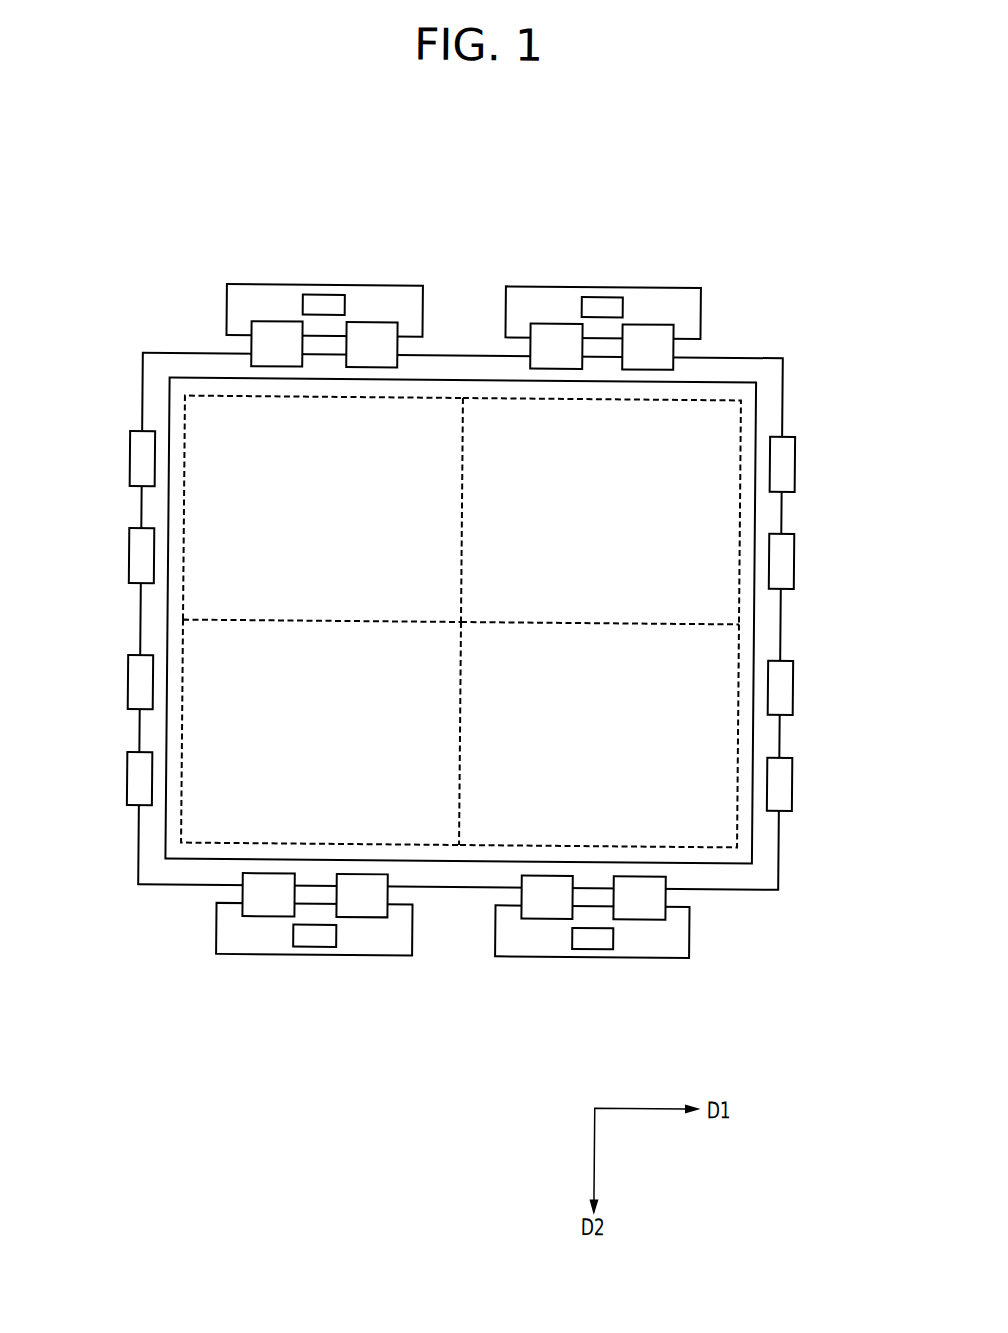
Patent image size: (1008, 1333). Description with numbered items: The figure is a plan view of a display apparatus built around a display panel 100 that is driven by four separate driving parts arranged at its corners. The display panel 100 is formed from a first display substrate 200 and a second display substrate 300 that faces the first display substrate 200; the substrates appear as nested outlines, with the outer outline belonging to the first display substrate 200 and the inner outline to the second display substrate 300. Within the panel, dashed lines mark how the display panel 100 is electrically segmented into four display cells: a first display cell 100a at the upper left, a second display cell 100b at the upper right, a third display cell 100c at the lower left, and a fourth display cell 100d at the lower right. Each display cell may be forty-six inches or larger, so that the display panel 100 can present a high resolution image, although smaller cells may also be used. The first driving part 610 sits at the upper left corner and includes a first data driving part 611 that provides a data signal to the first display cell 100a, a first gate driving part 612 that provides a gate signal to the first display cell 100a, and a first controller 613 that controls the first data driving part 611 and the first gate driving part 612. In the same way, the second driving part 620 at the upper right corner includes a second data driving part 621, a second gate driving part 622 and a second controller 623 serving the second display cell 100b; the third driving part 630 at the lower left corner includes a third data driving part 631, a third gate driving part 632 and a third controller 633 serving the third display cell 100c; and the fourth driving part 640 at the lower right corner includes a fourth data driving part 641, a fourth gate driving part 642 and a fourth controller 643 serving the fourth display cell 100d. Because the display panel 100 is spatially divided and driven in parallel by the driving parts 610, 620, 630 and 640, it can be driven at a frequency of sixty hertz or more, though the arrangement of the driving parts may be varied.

The display panel 100 is at (462, 521).
The first display cell 100a is at (323, 509).
The second display cell 100b is at (601, 511).
The third display cell 100c is at (321, 732).
The fourth display cell 100d is at (599, 734).
The first display substrate 200 is at (434, 356).
The second display substrate 300 is at (489, 380).
The first driving part 610 is at (225, 227).
The first data driving part 611 is at (249, 348).
The first gate driving part 612 is at (131, 434).
The first controller 613 is at (300, 310).
The second driving part 620 is at (852, 221).
The second data driving part 621 is at (671, 347).
The second gate driving part 622 is at (790, 434).
The second controller 623 is at (620, 310).
The third driving part 630 is at (226, 1016).
The third data driving part 631 is at (245, 896).
The third gate driving part 632 is at (133, 808).
The third controller 633 is at (296, 938).
The fourth driving part 640 is at (858, 1015).
The fourth data driving part 641 is at (668, 898).
The fourth gate driving part 642 is at (788, 808).
The fourth controller 643 is at (616, 941).